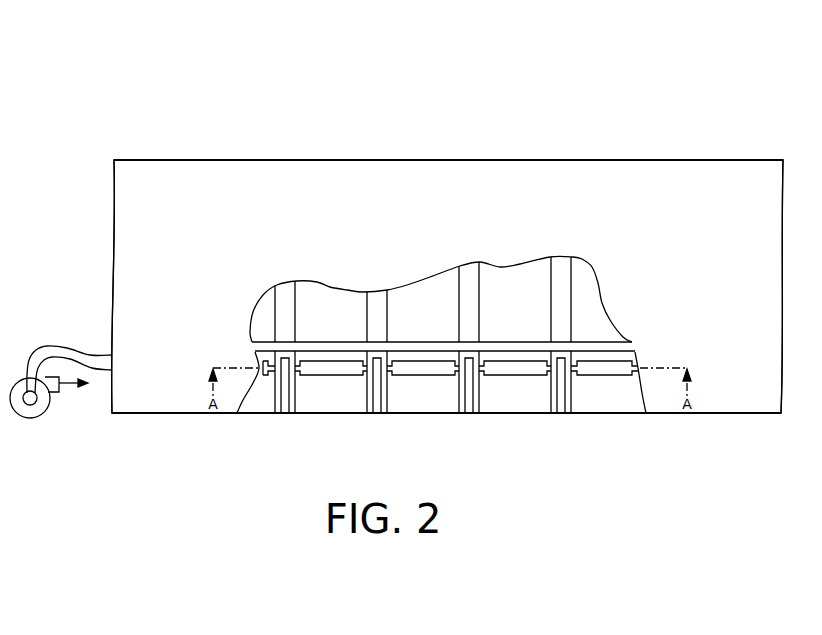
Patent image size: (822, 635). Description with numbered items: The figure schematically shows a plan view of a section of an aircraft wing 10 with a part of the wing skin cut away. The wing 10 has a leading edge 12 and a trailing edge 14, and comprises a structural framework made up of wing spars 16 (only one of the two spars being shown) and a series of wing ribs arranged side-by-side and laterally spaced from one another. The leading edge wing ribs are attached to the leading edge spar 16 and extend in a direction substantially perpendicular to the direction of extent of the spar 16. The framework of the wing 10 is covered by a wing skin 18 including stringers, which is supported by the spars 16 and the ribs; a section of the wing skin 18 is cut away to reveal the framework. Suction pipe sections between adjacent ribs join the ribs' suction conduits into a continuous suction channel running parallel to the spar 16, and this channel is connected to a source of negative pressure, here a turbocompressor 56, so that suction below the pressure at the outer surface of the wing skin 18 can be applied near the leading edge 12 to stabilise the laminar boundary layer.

The aircraft wing 10 is at (766, 68).
The leading edge 12 is at (183, 415).
The trailing edge 14 is at (343, 158).
The wing spar 16 is at (618, 347).
The wing skin 18 is at (673, 185).
The turbocompressor 56 is at (40, 418).